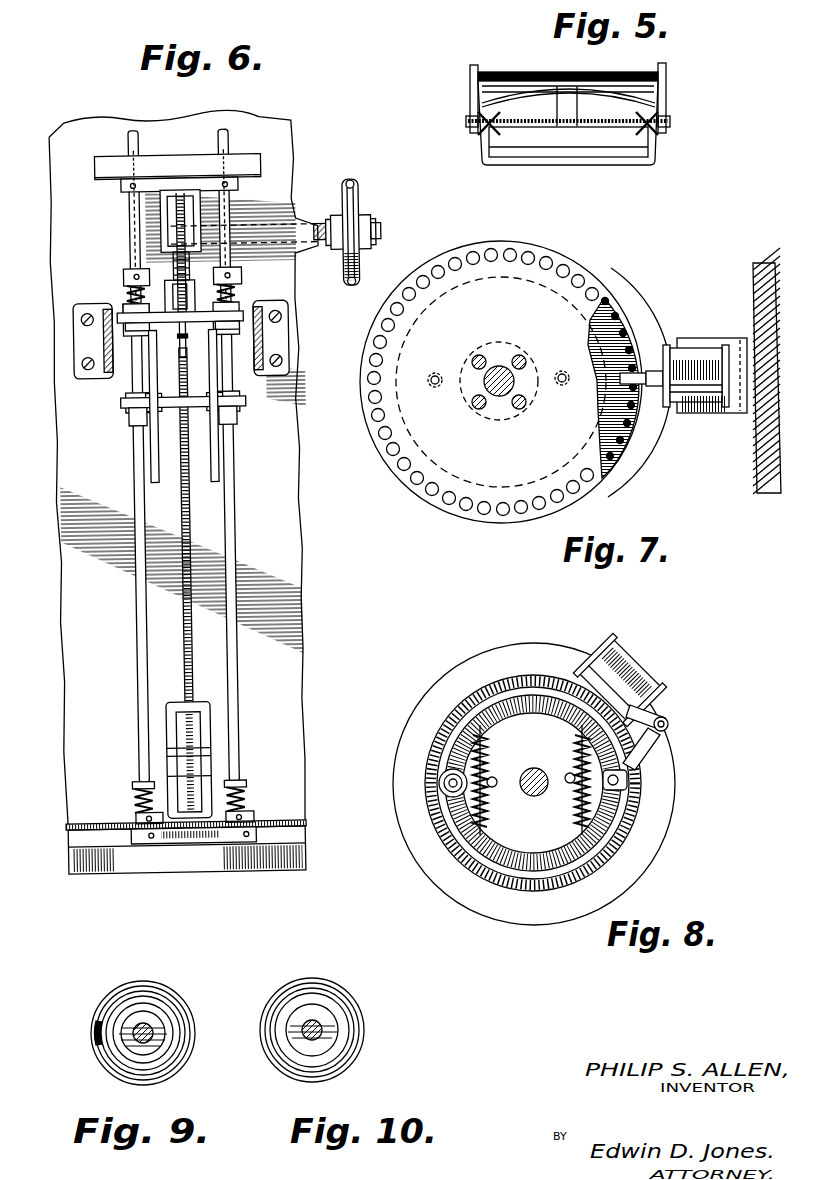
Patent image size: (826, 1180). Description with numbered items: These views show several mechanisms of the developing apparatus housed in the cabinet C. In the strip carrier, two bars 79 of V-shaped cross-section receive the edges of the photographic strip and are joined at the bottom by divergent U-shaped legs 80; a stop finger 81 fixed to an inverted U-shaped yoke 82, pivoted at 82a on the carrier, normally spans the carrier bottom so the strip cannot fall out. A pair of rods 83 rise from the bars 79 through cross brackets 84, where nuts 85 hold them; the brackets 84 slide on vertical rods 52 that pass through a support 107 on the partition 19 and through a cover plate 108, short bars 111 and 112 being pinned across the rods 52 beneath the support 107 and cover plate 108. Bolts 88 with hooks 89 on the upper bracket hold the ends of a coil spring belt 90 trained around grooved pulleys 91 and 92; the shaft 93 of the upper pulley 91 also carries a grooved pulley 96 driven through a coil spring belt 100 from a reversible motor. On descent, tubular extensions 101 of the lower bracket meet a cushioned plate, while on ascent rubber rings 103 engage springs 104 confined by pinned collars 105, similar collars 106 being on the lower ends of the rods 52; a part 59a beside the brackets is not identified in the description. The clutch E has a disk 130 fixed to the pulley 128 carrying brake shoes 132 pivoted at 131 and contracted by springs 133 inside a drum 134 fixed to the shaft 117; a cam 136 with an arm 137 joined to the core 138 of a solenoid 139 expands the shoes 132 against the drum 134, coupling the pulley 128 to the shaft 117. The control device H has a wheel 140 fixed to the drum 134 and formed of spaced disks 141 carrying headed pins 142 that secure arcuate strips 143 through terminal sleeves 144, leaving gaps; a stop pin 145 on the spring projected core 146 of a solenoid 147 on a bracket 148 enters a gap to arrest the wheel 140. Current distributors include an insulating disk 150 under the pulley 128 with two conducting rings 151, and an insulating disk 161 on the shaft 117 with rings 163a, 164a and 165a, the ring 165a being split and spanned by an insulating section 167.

In FIG. 6, the rods 52 is at (141, 140).
In FIG. 6, the support 107 is at (192, 158).
In FIG. 6, the short bar 111 is at (126, 187).
In FIG. 6, the grooved pulley 91 is at (180, 220).
In FIG. 6, the springs 104 is at (137, 272).
In FIG. 6, the pinned collars 105 is at (133, 287).
In FIG. 6, the rubber rings 103 is at (128, 300).
In FIG. 6, the nuts 85 is at (240, 303).
In FIG. 6, the cross brackets 84 is at (120, 316).
In FIG. 6, the bracket 59a is at (76, 332).
In FIG. 6, the bolts 88 is at (182, 340).
In FIG. 6, the hooks 89 is at (184, 355).
In FIG. 6, the tubular extensions 101 is at (130, 416).
In FIG. 6, the rods 83 is at (157, 470).
In FIG. 6, the vertical partition 19 is at (298, 629).
In FIG. 6, the coil spring belt 90 is at (183, 636).
In FIG. 6, the grooved pulley 92 is at (196, 760).
In FIG. 6, the collars 106 is at (134, 816).
In FIG. 6, the cover plate 108 is at (115, 832).
In FIG. 6, the short bar 112 is at (208, 832).
In FIG. 6, the shaft 93 is at (310, 226).
In FIG. 6, the grooved pulley 96 is at (362, 203).
In FIG. 6, the coil spring belt 100 is at (358, 183).
In FIG. 5, the inverted U-shaped yoke 82 is at (520, 78).
In FIG. 5, the pivot 82a is at (470, 122).
In FIG. 5, the bars 79 is at (486, 134).
In FIG. 5, the stop finger 81 is at (578, 120).
In FIG. 5, the U-shaped legs 80 is at (585, 158).
In FIG. 7, the drum 134 is at (500, 275).
In FIG. 8, the drum 134 is at (636, 791).
In FIG. 7, the wheel 140 is at (603, 273).
In FIG. 7, the spaced disks 141 is at (603, 315).
In FIG. 7, the arcuate strips 143 is at (625, 342).
In FIG. 7, the spring projected core 146 is at (650, 372).
In FIG. 7, the solenoid 147 is at (698, 347).
In FIG. 7, the stop pin 145 is at (640, 386).
In FIG. 7, the terminal sleeves 144 is at (612, 458).
In FIG. 7, the bracket 148 is at (708, 411).
In FIG. 7, the shaft 117 is at (498, 366).
In FIG. 8, the shaft 117 is at (534, 768).
In FIG. 9, the shaft 117 is at (151, 1028).
In FIG. 10, the shaft 117 is at (314, 1020).
In FIG. 7, the headed pins 142 is at (482, 515).
In FIG. 7, the cabinet C is at (764, 261).
In FIG. 7, the control device H is at (450, 480).
In FIG. 8, the brake shoes 132 is at (519, 700).
In FIG. 8, the solenoid 139 is at (624, 672).
In FIG. 8, the core 138 is at (656, 716).
In FIG. 8, the arm 137 is at (668, 728).
In FIG. 8, the cam 136 is at (630, 781).
In FIG. 8, the pulley 128 is at (655, 850).
In FIG. 8, the pivot 131 is at (440, 783).
In FIG. 8, the disk 130 is at (425, 820).
In FIG. 8, the springs 133 is at (572, 805).
In FIG. 8, the clutch E is at (428, 866).
In FIG. 9, the conducting ring 165a is at (153, 990).
In FIG. 9, the disk of insulating material 161 is at (178, 998).
In FIG. 9, the conducting ring 164a is at (172, 1037).
In FIG. 9, the section of insulating material 167 is at (94, 1033).
In FIG. 9, the conducting ring 163a is at (124, 1050).
In FIG. 10, the conducting rings 151 is at (336, 1010).
In FIG. 10, the disk of insulating material 150 is at (365, 1036).